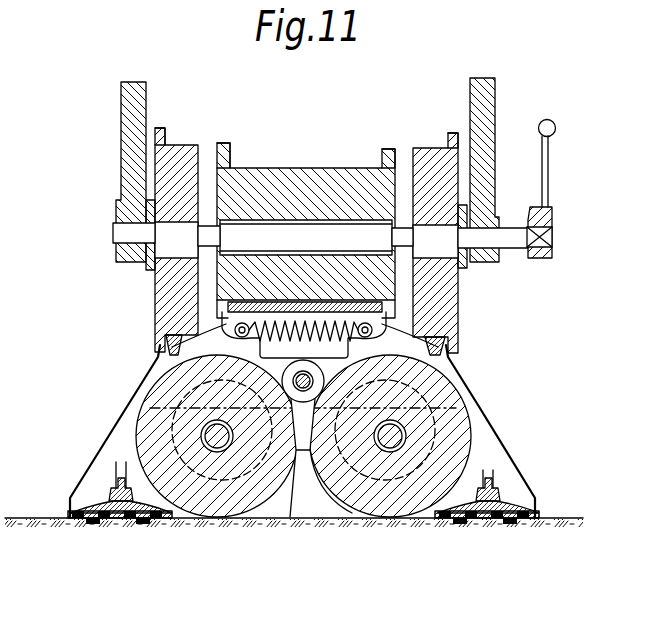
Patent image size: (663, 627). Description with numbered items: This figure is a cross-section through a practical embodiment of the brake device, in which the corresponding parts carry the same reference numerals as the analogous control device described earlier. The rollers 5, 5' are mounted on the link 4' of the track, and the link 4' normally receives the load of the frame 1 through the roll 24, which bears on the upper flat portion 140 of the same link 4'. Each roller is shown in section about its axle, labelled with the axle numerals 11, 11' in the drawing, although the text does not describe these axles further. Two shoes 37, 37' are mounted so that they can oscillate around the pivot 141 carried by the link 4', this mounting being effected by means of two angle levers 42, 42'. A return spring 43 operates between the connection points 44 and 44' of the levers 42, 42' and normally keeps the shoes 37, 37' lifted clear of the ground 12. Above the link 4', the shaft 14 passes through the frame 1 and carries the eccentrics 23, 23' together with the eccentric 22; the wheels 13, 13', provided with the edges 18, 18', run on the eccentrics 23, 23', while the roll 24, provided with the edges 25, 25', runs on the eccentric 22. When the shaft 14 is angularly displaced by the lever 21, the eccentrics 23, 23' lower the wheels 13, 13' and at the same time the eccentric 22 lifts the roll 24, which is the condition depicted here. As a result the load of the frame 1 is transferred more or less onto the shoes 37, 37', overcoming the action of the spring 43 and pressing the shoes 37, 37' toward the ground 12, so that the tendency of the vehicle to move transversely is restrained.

The frame 1 is at (128, 106).
The wheel 13 is at (132, 240).
The wheel 13' is at (475, 243).
The edge 18 is at (176, 107).
The edge 18' is at (436, 110).
The roll 24 is at (303, 178).
The edge 25 is at (235, 118).
The edge 25' is at (374, 118).
The shaft 14 is at (130, 232).
The eccentric 22 is at (252, 238).
The eccentric 23 is at (132, 261).
The eccentric 23' is at (475, 259).
The lever 21 is at (549, 170).
The upper flat portion 140 is at (386, 304).
The connection point 44 is at (212, 342).
The connection point 44' is at (447, 339).
The return spring 43 is at (465, 372).
The pivot 141 is at (283, 381).
The link 4' is at (315, 468).
The roller 5 is at (217, 465).
The roller 5' is at (310, 465).
The axle 11 is at (196, 498).
The axle 11' is at (402, 498).
The angle lever 42 is at (113, 431).
The angle lever 42' is at (491, 431).
The shoe 37 is at (120, 519).
The shoe 37' is at (487, 523).
The ground 12 is at (562, 516).